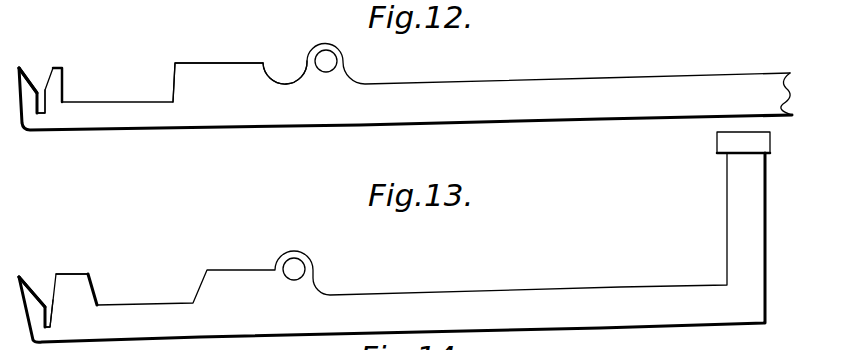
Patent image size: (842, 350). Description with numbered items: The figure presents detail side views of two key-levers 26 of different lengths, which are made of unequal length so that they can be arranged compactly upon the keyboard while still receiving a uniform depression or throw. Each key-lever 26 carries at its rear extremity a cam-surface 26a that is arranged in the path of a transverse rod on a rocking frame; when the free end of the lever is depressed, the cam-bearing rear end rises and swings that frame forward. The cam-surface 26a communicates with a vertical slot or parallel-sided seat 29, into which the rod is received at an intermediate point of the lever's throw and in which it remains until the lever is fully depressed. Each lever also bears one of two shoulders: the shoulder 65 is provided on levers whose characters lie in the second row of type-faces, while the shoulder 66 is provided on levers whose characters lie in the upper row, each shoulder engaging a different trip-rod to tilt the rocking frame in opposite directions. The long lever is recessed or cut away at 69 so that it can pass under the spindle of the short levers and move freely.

In FIG. 12, the key-lever 26 is at (405, 86).
In FIG. 13, the key-lever 26 is at (394, 237).
In FIG. 12, the cam-surface 26a is at (32, 72).
In FIG. 13, the cam-surface 26a is at (28, 280).
In FIG. 12, the vertical slot or parallel-sided seat 29 is at (38, 102).
In FIG. 13, the vertical slot or parallel-sided seat 29 is at (50, 318).
In FIG. 12, the shoulder 65 is at (183, 66).
In FIG. 13, the shoulder 66 is at (78, 275).
In FIG. 12, the recess 69 is at (287, 85).